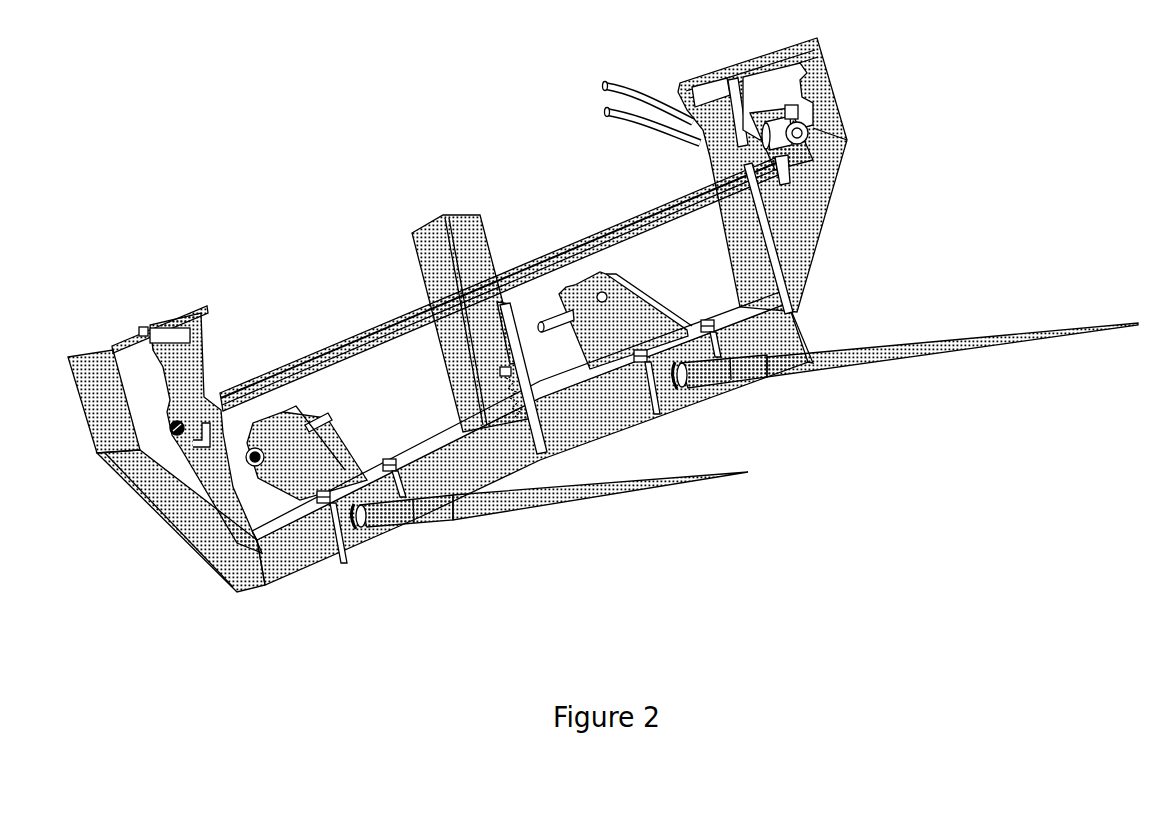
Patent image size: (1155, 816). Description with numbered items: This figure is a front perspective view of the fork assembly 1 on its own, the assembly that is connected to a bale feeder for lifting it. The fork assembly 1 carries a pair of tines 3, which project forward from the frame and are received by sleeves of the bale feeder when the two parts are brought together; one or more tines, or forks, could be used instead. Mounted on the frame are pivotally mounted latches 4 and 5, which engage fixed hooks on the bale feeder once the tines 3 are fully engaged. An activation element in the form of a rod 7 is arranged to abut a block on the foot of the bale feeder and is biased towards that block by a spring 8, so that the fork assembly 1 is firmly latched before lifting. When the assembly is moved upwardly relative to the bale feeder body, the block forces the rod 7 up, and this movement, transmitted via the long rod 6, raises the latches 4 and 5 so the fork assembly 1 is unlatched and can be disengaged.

The fork assembly 1 is at (855, 98).
The tines 3 is at (600, 478).
The latch 4 is at (223, 400).
The latch 5 is at (790, 173).
The rod 6 is at (350, 342).
The rod 7 is at (503, 333).
The spring 8 is at (507, 382).